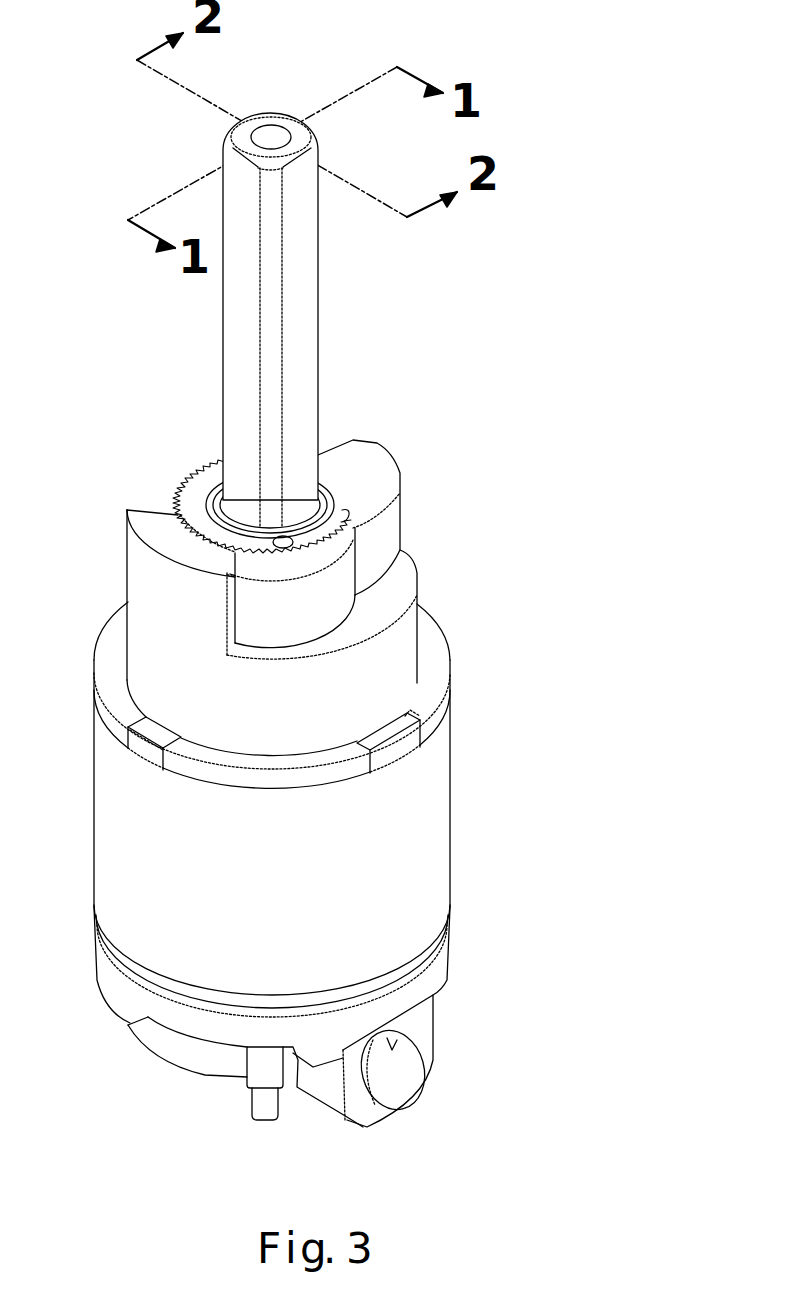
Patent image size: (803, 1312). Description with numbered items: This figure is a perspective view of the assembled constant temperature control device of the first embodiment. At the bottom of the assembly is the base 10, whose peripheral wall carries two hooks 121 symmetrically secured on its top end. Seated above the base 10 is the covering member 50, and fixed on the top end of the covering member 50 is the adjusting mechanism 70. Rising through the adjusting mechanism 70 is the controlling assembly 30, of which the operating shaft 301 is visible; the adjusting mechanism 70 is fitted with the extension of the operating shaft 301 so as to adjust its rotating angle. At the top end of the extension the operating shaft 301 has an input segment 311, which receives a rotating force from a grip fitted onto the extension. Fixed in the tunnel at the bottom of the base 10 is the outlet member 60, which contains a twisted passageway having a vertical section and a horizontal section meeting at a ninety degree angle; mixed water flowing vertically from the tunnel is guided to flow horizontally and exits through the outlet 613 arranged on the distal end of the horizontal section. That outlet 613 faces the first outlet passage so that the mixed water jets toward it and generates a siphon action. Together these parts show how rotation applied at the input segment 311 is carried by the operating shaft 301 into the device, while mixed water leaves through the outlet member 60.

The base 10 is at (455, 862).
The controlling assembly 30 is at (259, 276).
The covering member 50 is at (498, 710).
The outlet member 60 is at (351, 1082).
The adjusting mechanism 70 is at (402, 513).
The hooks 121 is at (400, 745).
The operating shaft 301 is at (242, 335).
The input segment 311 is at (272, 120).
The outlet 613 is at (397, 1088).